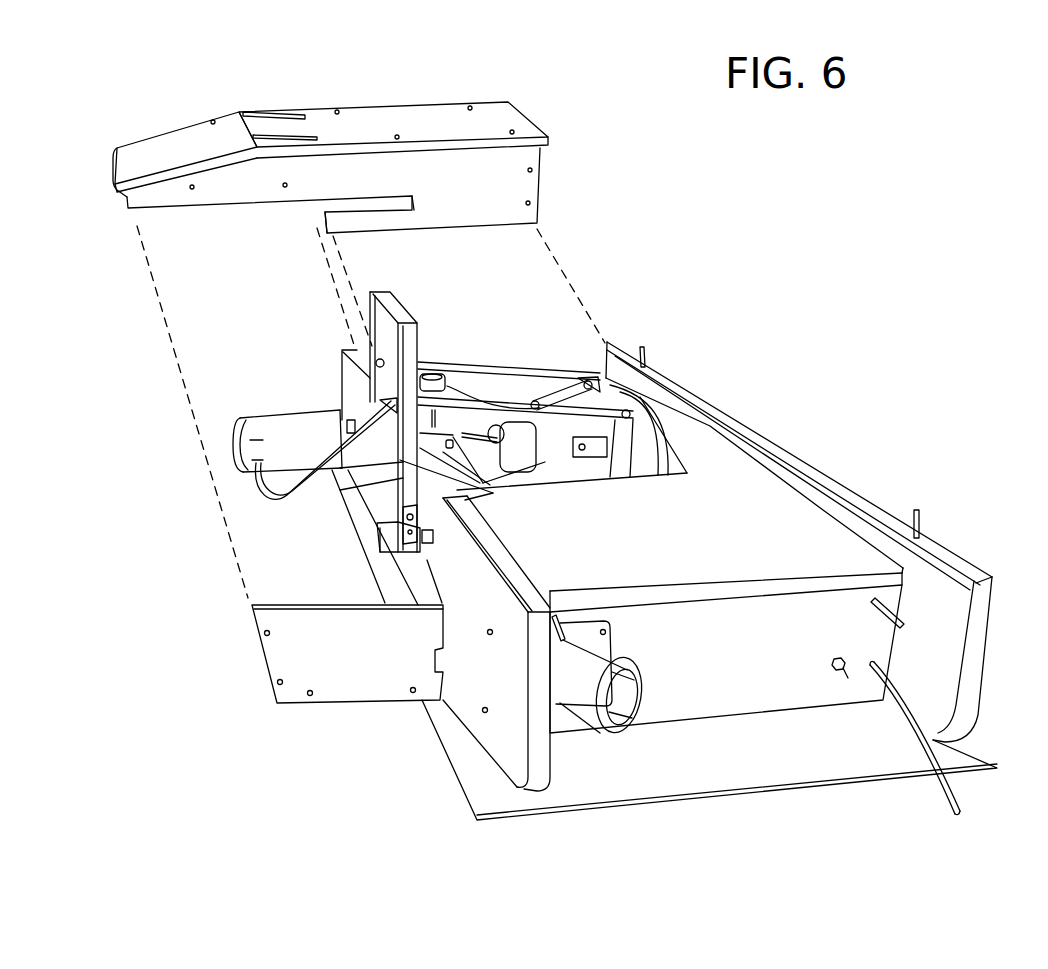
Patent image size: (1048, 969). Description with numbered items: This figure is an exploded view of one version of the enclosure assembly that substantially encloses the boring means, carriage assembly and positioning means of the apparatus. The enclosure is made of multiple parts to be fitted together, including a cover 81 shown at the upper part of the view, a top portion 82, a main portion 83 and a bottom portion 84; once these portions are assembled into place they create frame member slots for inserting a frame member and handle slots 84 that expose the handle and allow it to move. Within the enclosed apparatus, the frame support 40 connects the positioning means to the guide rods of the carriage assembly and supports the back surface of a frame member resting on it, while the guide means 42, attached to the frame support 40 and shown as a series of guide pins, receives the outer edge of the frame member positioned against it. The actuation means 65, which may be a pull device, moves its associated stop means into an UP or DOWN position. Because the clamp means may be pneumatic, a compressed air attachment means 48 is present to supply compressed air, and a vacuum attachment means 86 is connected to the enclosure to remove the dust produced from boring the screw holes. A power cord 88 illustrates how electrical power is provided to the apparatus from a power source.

The frame support 40 is at (693, 387).
The guide means 42 is at (645, 358).
The compressed air attachment means 48 is at (833, 677).
The actuation means 65 is at (556, 615).
The top cover 81 is at (490, 112).
The top portion 82 is at (738, 705).
The main portion 83 is at (348, 688).
The bottom portion 84 is at (278, 136).
The vacuum attachment means 86 is at (587, 700).
The power cord 88 is at (893, 686).